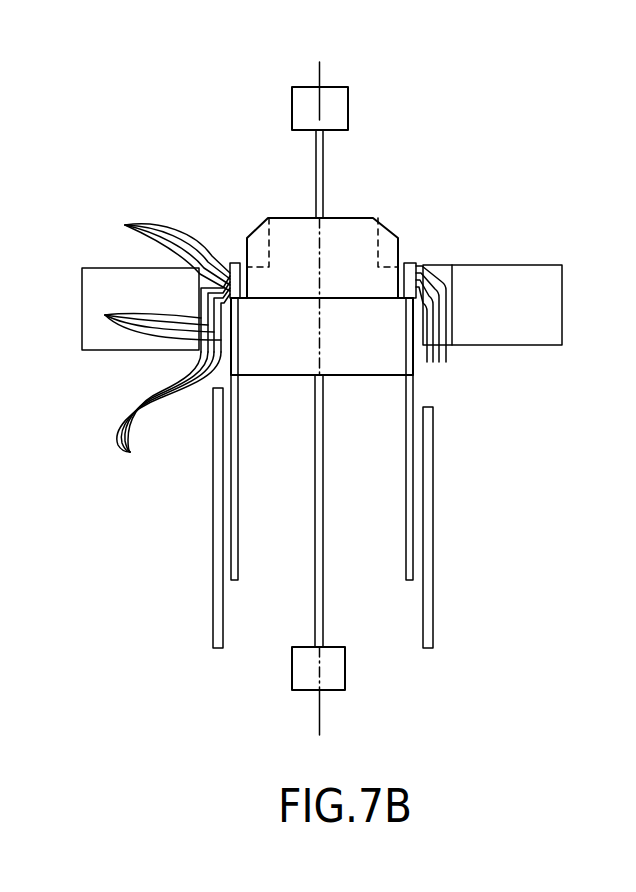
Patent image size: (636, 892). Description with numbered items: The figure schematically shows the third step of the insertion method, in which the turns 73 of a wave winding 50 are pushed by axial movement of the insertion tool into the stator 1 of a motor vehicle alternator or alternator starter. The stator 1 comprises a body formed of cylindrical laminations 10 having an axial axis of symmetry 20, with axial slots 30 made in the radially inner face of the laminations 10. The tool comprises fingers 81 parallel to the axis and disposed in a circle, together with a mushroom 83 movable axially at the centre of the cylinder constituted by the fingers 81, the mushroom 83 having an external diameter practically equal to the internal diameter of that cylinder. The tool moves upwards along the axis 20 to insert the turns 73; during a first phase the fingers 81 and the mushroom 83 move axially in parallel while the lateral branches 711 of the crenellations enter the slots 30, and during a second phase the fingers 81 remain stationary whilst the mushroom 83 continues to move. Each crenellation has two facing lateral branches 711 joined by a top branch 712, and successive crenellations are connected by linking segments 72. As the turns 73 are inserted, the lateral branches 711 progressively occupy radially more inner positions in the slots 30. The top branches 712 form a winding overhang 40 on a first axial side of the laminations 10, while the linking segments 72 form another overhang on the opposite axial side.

The stator 1 is at (566, 264).
The laminations 10 is at (520, 315).
The axial axis of symmetry 20 is at (323, 78).
The slots 30 is at (442, 270).
The winding overhang 40 is at (168, 358).
The wave winding 50 is at (450, 352).
The linking segments 72 is at (169, 405).
The lateral branches 711 is at (163, 315).
The top branch 712 is at (177, 245).
The turns 73 is at (426, 338).
The fingers 81 is at (234, 262).
The mushroom 83 is at (323, 433).